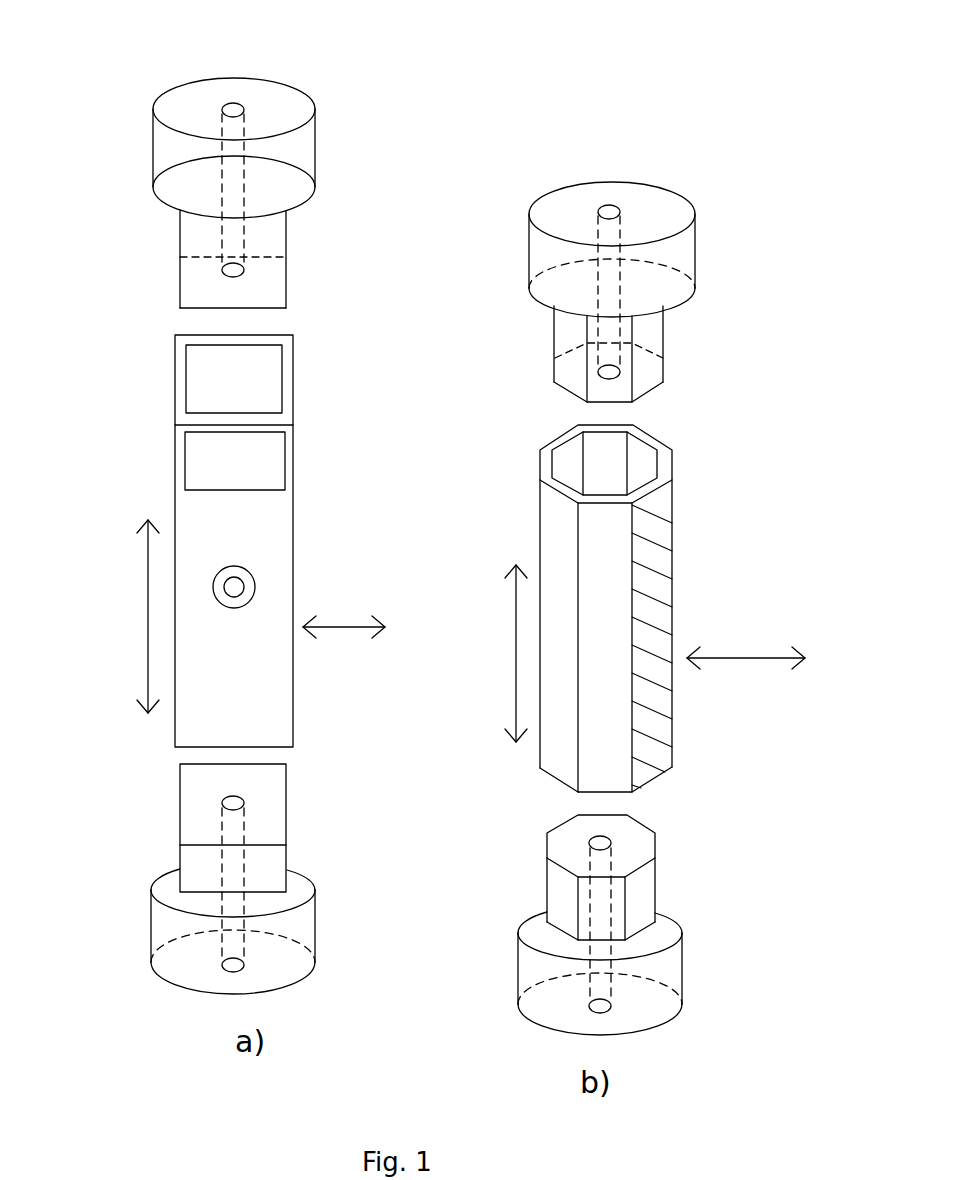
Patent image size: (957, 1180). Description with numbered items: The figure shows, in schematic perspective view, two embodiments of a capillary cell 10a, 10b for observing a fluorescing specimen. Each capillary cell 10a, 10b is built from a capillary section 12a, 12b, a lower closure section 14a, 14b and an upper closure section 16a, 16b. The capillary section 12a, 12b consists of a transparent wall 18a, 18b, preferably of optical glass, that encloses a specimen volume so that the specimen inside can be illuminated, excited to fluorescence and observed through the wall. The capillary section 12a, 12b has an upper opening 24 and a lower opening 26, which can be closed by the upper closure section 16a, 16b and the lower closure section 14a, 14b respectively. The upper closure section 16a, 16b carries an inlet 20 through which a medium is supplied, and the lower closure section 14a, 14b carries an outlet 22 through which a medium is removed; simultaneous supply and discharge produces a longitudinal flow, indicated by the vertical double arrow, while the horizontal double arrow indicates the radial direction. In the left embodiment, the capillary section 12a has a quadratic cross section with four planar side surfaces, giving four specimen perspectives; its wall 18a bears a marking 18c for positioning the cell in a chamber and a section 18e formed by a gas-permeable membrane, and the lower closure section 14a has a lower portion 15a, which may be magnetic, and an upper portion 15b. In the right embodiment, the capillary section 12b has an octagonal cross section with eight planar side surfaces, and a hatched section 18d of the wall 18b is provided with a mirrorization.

The capillary cell 10a is at (366, 122).
The capillary cell 10b is at (778, 172).
The capillary section 12a is at (333, 508).
The capillary section 12b is at (735, 522).
The lower closure section 14a is at (298, 888).
The lower closure section 14b is at (667, 960).
The lower portion 15a is at (175, 970).
The upper portion 15b is at (178, 803).
The upper closure section 16a is at (299, 148).
The upper closure section 16b is at (675, 252).
The wall 18a is at (210, 510).
The wall 18b is at (603, 573).
The marking 18c is at (248, 588).
The section of the wall 18d is at (653, 620).
The section of the wall 18e is at (268, 450).
The inlet 20 is at (233, 126).
The outlet 22 is at (230, 943).
The upper opening 24 is at (237, 385).
The lower opening 26 is at (254, 766).